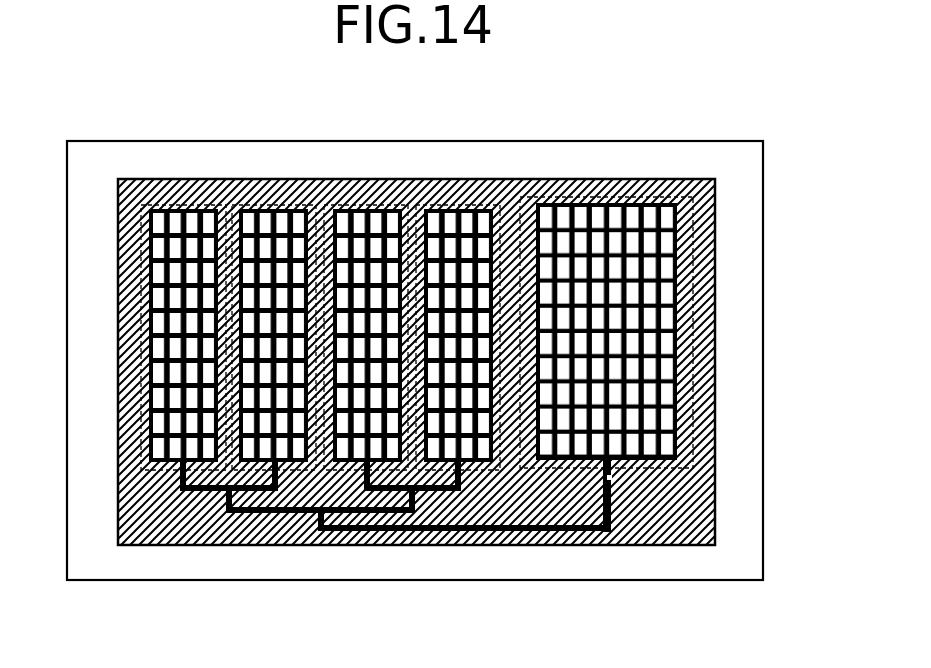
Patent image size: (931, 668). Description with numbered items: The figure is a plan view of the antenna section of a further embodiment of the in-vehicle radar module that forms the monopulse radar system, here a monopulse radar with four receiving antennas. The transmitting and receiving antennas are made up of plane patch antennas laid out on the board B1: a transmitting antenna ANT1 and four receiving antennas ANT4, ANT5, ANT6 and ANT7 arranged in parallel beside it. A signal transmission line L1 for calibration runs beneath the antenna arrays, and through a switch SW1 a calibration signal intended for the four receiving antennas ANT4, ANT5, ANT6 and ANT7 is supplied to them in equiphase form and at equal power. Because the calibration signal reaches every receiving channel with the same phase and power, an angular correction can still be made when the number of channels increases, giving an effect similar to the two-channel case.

The substrate board B1 is at (232, 572).
The signal transmission line L1 is at (442, 548).
The switch SW1 is at (615, 545).
The receiving antenna ANT4 is at (188, 179).
The receiving antenna ANT5 is at (285, 179).
The receiving antenna ANT6 is at (372, 179).
The receiving antenna ANT7 is at (465, 179).
The transmitting antenna ANT1 is at (600, 178).